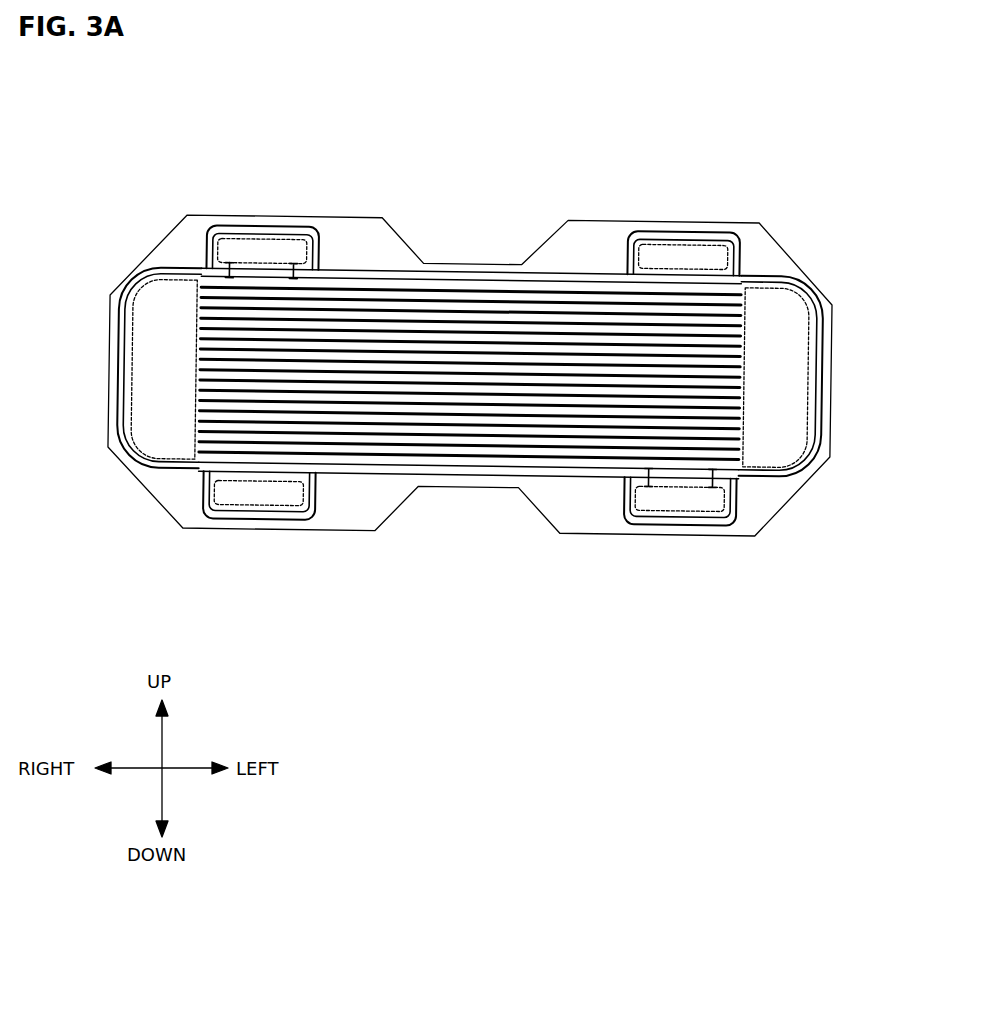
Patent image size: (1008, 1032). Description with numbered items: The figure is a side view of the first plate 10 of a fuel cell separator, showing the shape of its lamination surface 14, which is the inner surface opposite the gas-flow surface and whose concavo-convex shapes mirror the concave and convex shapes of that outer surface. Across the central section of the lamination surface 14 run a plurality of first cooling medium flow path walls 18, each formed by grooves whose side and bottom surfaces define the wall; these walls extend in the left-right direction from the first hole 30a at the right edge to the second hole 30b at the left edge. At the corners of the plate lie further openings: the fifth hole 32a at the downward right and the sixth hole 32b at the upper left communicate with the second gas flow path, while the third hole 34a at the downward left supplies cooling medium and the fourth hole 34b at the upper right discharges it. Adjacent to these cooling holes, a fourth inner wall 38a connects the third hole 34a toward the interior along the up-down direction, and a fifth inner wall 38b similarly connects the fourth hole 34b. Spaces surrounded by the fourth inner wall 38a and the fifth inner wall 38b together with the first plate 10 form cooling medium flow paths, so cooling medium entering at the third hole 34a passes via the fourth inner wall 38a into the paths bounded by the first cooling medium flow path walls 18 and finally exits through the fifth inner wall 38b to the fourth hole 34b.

The first plate 10 is at (180, 547).
The lamination surface 14 is at (598, 517).
The first cooling medium flow path walls 18 is at (492, 306).
The first hole 30a is at (147, 368).
The second hole 30b is at (777, 375).
The fifth hole 32a is at (268, 490).
The sixth hole 32b is at (672, 253).
The third hole 34a is at (683, 503).
The fourth hole 34b is at (257, 250).
The fourth inner wall 38a is at (663, 490).
The fifth inner wall 38b is at (277, 263).